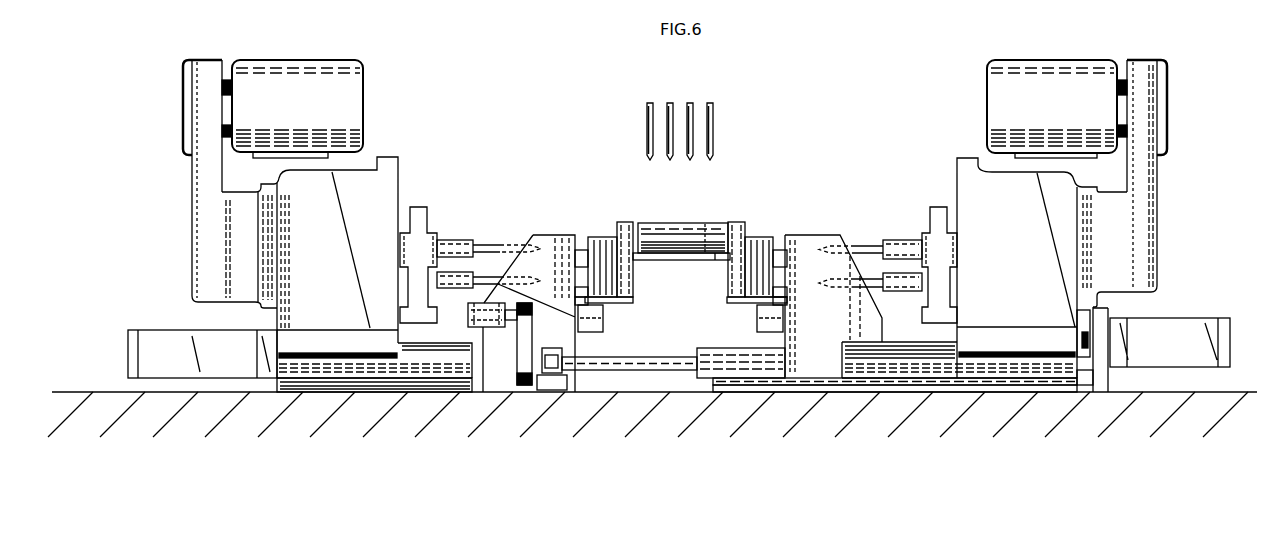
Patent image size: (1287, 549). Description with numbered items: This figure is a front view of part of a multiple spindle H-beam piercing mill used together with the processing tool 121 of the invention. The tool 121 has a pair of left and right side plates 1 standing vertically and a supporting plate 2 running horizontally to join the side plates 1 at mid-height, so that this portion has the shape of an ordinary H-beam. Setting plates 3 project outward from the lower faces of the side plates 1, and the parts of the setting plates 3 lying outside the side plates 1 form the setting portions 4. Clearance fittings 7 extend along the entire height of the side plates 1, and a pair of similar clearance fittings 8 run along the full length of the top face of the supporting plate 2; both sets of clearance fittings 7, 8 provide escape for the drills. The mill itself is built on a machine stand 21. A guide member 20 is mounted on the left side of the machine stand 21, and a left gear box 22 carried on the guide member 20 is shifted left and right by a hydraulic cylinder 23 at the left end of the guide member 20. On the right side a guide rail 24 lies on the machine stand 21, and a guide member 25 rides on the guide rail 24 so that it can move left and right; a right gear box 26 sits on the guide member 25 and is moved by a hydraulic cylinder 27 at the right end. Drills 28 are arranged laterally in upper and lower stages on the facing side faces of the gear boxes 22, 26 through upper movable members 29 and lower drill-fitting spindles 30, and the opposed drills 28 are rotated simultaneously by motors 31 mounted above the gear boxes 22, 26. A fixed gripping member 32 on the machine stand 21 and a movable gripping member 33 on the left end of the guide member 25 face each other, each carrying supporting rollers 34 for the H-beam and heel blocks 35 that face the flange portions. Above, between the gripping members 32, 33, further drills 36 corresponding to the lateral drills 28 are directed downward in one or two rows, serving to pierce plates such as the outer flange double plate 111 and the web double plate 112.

The side plate 1 is at (628, 292).
The supporting plate 2 is at (727, 260).
The setting plate 3 is at (575, 301).
The setting portion 4 is at (575, 290).
The clearance fitting 7 is at (623, 222).
The clearance fitting 8 is at (670, 260).
The guide member 20 is at (373, 393).
The machine stand 21 is at (1200, 421).
The left gear box 22 is at (367, 181).
The hydraulic cylinder 23 is at (227, 338).
The guide rail 24 is at (791, 393).
The guide member 25 is at (901, 382).
The right gear box 26 is at (993, 173).
The hydraulic cylinder 27 is at (1158, 326).
The drill 28 is at (487, 275).
The upper movable member 29 is at (441, 255).
The lower drill-fitting spindle 30 is at (447, 262).
The motor 31 is at (358, 96).
The fixed gripping member 32 is at (537, 236).
The movable gripping member 33 is at (811, 242).
The supporting roller 34 is at (603, 318).
The heel block 35 is at (578, 250).
The drill 36 is at (710, 103).
The outer flange double plate 111 is at (598, 237).
The web double plate 112 is at (668, 225).
The processing tool 121 is at (720, 228).